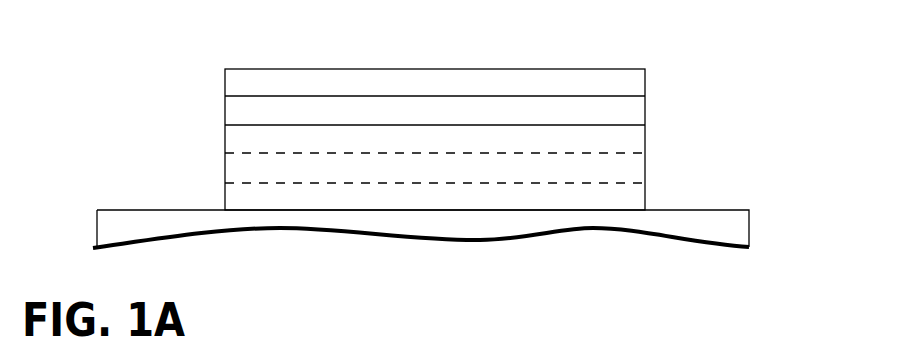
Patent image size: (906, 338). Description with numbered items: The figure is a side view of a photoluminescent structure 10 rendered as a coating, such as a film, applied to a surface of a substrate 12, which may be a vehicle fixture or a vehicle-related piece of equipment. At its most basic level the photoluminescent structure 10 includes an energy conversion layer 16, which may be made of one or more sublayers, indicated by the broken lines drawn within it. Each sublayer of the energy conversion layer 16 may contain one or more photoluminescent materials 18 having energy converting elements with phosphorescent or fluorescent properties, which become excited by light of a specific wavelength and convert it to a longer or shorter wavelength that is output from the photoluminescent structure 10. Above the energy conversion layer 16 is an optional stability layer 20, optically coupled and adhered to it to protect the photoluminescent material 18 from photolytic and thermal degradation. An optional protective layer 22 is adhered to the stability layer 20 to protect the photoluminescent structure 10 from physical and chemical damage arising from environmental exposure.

The photoluminescent structure 10 is at (582, 42).
The substrate 12 is at (692, 210).
The energy conversion layer 16 is at (225, 165).
The photoluminescent material 18 is at (598, 168).
The stability layer 20 is at (225, 110).
The protective layer 22 is at (318, 69).